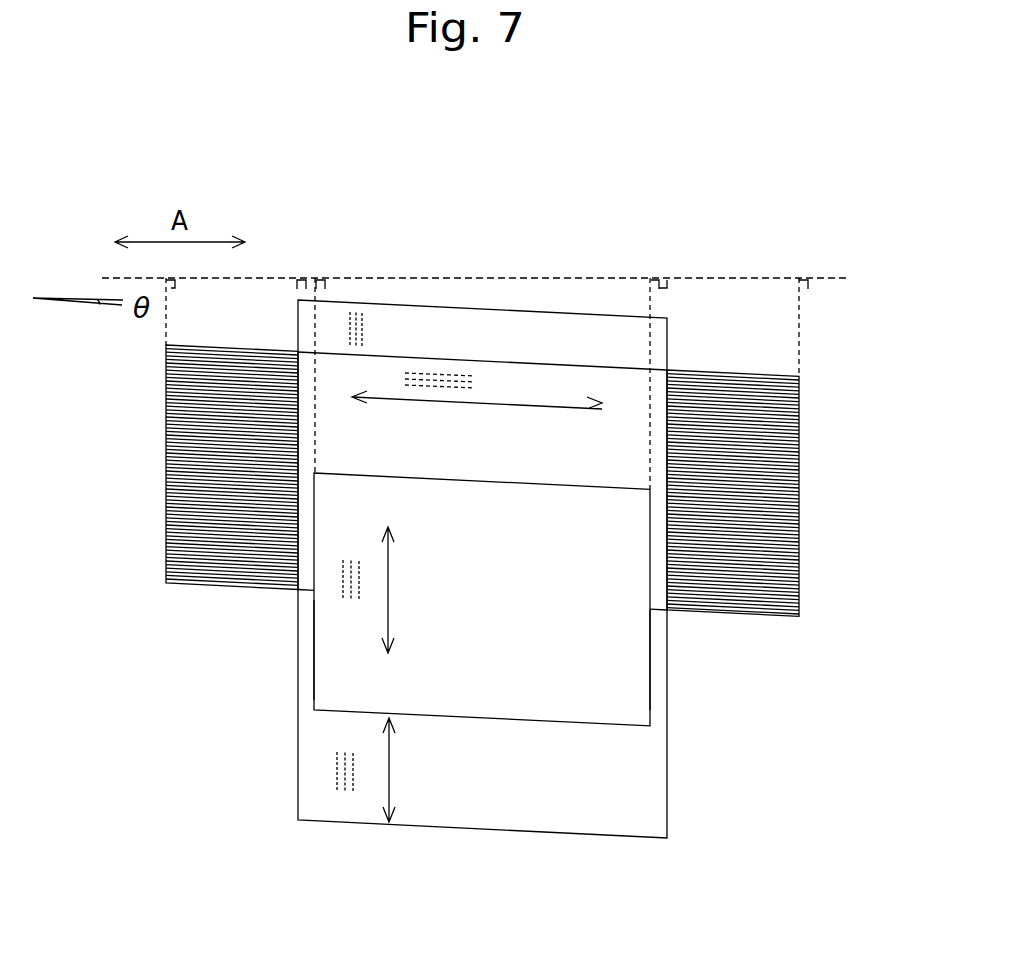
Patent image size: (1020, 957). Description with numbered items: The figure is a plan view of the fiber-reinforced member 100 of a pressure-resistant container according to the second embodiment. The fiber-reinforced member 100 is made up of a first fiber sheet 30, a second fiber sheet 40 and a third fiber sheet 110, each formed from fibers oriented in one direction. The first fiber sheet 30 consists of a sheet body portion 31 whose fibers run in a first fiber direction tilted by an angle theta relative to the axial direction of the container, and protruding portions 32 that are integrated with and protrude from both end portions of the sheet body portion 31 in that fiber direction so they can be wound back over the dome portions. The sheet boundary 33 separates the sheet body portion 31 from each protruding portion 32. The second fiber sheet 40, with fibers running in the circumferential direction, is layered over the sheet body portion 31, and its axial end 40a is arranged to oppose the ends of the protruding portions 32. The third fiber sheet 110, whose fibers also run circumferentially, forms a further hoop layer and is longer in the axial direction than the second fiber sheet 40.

The first fiber sheet 30 is at (585, 208).
The sheet body portion 31 is at (508, 380).
The protruding portion 32 is at (212, 360).
The sheet boundary 33 is at (297, 592).
The second fiber sheet 40 is at (612, 703).
The end of the second fiber sheet 40a is at (313, 677).
The fiber-reinforced member 100 is at (702, 697).
The third fiber sheet 110 is at (525, 322).